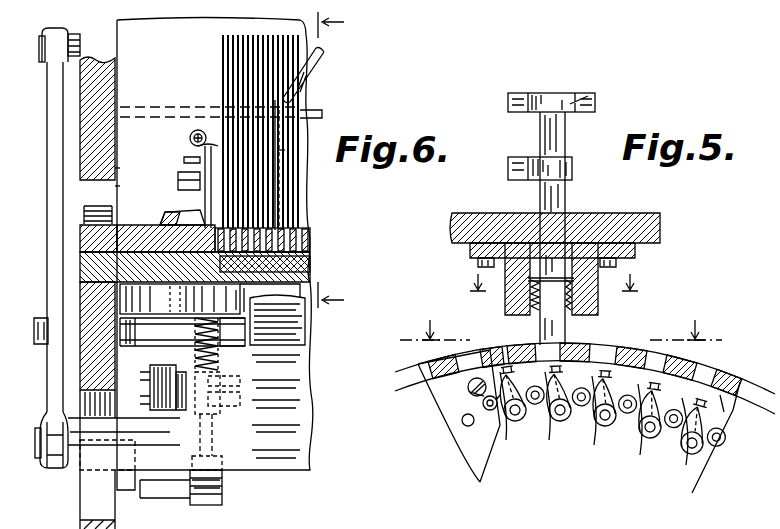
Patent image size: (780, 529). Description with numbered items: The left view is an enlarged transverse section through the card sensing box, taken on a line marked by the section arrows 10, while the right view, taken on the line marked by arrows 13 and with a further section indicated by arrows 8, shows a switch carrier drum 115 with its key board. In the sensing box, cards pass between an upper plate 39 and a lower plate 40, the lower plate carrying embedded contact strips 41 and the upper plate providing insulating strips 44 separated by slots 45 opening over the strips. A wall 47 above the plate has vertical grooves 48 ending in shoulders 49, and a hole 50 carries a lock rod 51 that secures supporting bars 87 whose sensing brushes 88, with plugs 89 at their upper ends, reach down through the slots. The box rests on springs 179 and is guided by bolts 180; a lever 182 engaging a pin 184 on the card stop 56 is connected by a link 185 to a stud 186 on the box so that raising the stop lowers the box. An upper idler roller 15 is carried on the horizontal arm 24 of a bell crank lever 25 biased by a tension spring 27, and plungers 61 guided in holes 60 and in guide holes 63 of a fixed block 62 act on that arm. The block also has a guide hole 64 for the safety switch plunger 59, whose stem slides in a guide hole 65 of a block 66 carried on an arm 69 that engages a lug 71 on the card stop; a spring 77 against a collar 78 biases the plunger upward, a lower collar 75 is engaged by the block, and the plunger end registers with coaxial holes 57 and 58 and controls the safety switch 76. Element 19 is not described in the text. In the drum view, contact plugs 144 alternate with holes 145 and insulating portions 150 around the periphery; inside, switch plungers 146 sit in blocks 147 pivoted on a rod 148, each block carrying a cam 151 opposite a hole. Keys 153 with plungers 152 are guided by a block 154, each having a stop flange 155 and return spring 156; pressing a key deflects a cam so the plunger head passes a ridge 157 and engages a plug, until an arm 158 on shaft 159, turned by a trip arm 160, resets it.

In FIG. 6, the section line 10- 10 is at (342, 161).
In FIG. 6, the upper idler roller 15 is at (208, 173).
In FIG. 6, the bracket 19 is at (40, 318).
In FIG. 6, the horizontal arm 24 is at (178, 178).
In FIG. 6, the bell crank lever 25 is at (184, 160).
In FIG. 6, the tension spring 27 is at (190, 136).
In FIG. 6, the upper plate 39 is at (88, 240).
In FIG. 6, the lower plate 40 is at (88, 284).
In FIG. 6, the contact strip 41 is at (308, 264).
In FIG. 6, the insulating strip 44 is at (292, 244).
In FIG. 6, the slot 45 is at (290, 230).
In FIG. 6, the wall 47 is at (150, 46).
In FIG. 6, the vertical groove 48 is at (222, 52).
In FIG. 6, the horizontal shoulder 49 is at (262, 210).
In FIG. 6, the hole 50 is at (148, 108).
In FIG. 6, the lock rod 51 is at (318, 110).
In FIG. 6, the card stop plunger 56 is at (304, 374).
In FIG. 6, the hole 57 is at (112, 210).
In FIG. 6, the hole 58 is at (182, 270).
In FIG. 6, the safety switch control plunger 59 is at (216, 430).
In FIG. 6, the vertical hole 60 is at (180, 244).
In FIG. 6, the plunger 61 is at (180, 206).
In FIG. 6, the fixed block 62 is at (244, 298).
In FIG. 6, the vertical guide hole 63 is at (180, 299).
In FIG. 6, the vertical guide hole 64 is at (220, 344).
In FIG. 6, the guide hole 65 is at (240, 382).
In FIG. 6, the block 66 is at (240, 400).
In FIG. 6, the arm 69 is at (156, 372).
In FIG. 6, the lug 71 is at (186, 386).
In FIG. 6, the lower fixed collar 75 is at (196, 414).
In FIG. 6, the safety switch 76 is at (224, 480).
In FIG. 6, the spring 77 is at (222, 352).
In FIG. 6, the collar 78 is at (196, 328).
In FIG. 6, the supporting bar 87 is at (286, 133).
In FIG. 6, the sensing brush 88 is at (286, 168).
In FIG. 6, the plug 89 is at (306, 74).
In FIG. 6, the spring 179 is at (132, 181).
In FIG. 6, the guide bolt 180 is at (118, 174).
In FIG. 6, the lever 182 is at (56, 466).
In FIG. 6, the pin 184 is at (124, 444).
In FIG. 6, the link 185 is at (96, 106).
In FIG. 6, the stud 186 is at (74, 50).
In FIG. 5, the section line 8- 8 is at (553, 287).
In FIG. 5, the section line 13- 13 is at (563, 338).
In FIG. 5, the switch carrier 115 is at (448, 444).
In FIG. 5, the contact plug 144 is at (580, 348).
In FIG. 5, the hole 145 is at (610, 350).
In FIG. 5, the switch plunger 146 is at (566, 416).
In FIG. 5, the block 147 is at (578, 392).
In FIG. 5, the transverse rod 148 is at (462, 420).
In FIG. 5, the insulating portion 150 is at (594, 352).
In FIG. 5, the cam 151 is at (566, 436).
In FIG. 5, the plunger 152 is at (554, 136).
In FIG. 5, the key 153 is at (545, 100).
In FIG. 5, the block 154 is at (590, 284).
In FIG. 5, the stop flange 155 is at (532, 288).
In FIG. 5, the spring 156 is at (540, 300).
In FIG. 5, the ridge 157 is at (612, 374).
In FIG. 5, the arm 158 is at (518, 396).
In FIG. 5, the shaft 159 is at (530, 416).
In FIG. 5, the trip arm 160 is at (468, 390).